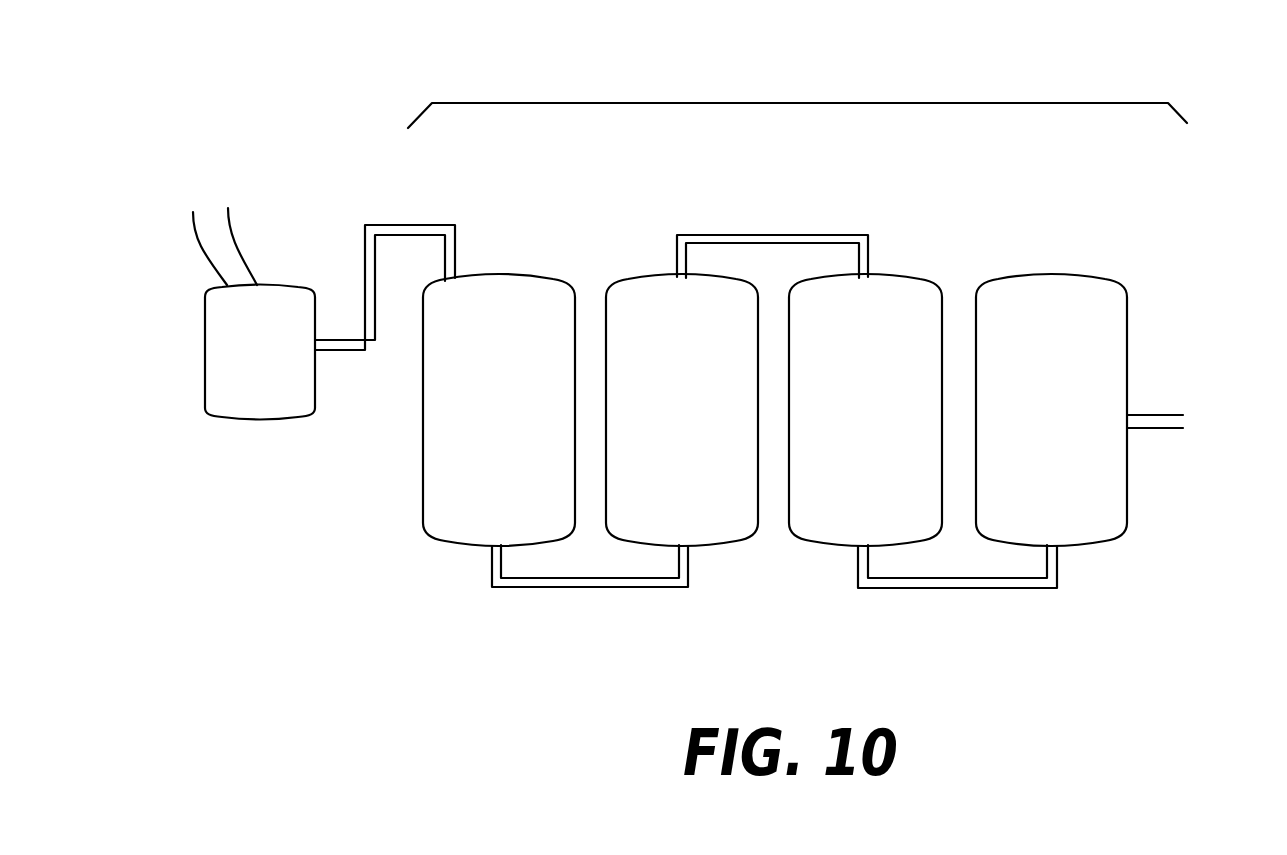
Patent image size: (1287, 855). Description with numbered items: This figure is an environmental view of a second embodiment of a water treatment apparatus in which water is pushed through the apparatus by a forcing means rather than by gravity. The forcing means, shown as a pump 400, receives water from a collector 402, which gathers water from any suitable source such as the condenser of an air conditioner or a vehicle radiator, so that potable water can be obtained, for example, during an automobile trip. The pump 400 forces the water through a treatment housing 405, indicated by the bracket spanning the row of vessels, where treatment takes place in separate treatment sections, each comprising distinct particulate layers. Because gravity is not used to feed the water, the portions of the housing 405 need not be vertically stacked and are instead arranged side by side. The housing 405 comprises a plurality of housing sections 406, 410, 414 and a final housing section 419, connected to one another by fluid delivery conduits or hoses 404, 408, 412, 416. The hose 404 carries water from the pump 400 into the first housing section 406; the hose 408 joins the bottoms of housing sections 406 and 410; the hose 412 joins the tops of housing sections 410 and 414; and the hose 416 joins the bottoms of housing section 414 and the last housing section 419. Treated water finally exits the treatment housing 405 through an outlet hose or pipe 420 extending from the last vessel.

The pump 400 is at (297, 373).
The collector 402 is at (200, 242).
The fluid delivery conduit or hose 404 is at (405, 224).
The treatment housing 405 is at (683, 103).
The housing section 406 is at (530, 421).
The fluid delivery conduit or hose 408 is at (577, 587).
The housing section 410 is at (719, 423).
The fluid delivery conduit or hose 412 is at (743, 235).
The housing section 414 is at (894, 436).
The fluid delivery conduit or hose 416 is at (928, 588).
The fourth reactor vessel 419 is at (1069, 427).
The outlet hose or pipe 420 is at (1147, 428).